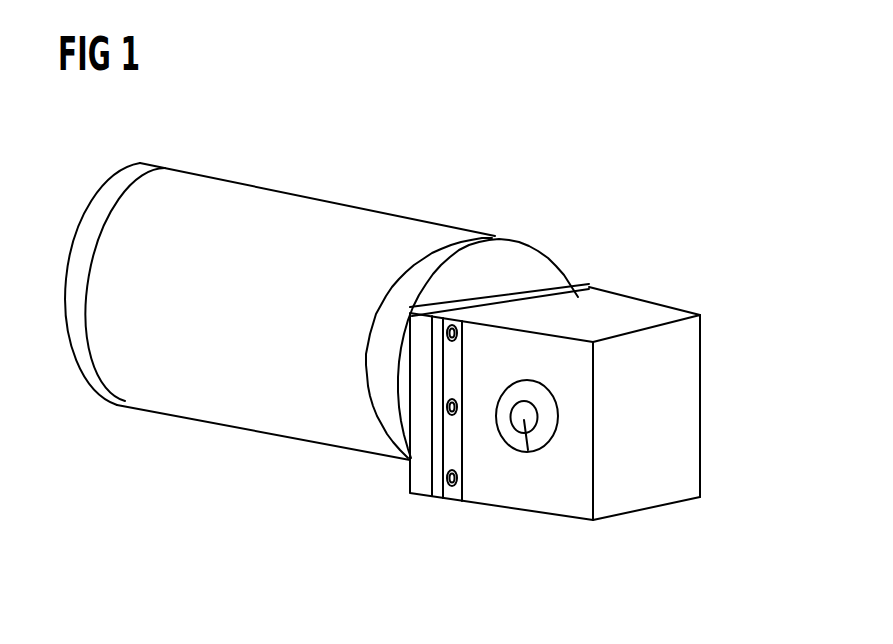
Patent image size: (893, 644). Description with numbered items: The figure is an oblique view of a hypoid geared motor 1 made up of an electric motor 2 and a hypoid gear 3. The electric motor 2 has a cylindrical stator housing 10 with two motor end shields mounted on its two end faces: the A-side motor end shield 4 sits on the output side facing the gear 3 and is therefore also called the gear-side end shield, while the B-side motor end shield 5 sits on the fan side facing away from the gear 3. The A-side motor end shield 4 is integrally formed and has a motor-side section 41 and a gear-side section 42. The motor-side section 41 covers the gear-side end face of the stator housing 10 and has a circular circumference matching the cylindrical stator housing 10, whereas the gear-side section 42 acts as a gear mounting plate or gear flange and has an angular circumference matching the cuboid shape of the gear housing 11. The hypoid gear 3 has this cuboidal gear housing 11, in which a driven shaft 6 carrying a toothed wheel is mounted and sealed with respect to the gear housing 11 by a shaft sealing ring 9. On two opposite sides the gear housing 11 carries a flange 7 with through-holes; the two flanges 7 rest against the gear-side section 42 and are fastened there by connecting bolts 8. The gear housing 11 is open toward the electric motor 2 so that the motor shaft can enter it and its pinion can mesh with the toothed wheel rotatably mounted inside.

The hypoid geared motor 1 is at (447, 140).
The electric motor 2 is at (334, 197).
The hypoid gear 3 is at (637, 296).
The A-side motor end shield 4 is at (530, 233).
The motor-side section 41 is at (489, 257).
The gear-side section 42 is at (565, 286).
The B-side motor end shield 5 is at (142, 172).
The driven shaft 6 is at (528, 450).
The flange 7 is at (456, 443).
The connecting bolts 8 is at (459, 484).
The shaft sealing ring 9 is at (528, 450).
The stator housing 10 is at (243, 413).
The gear housing 11 is at (683, 388).